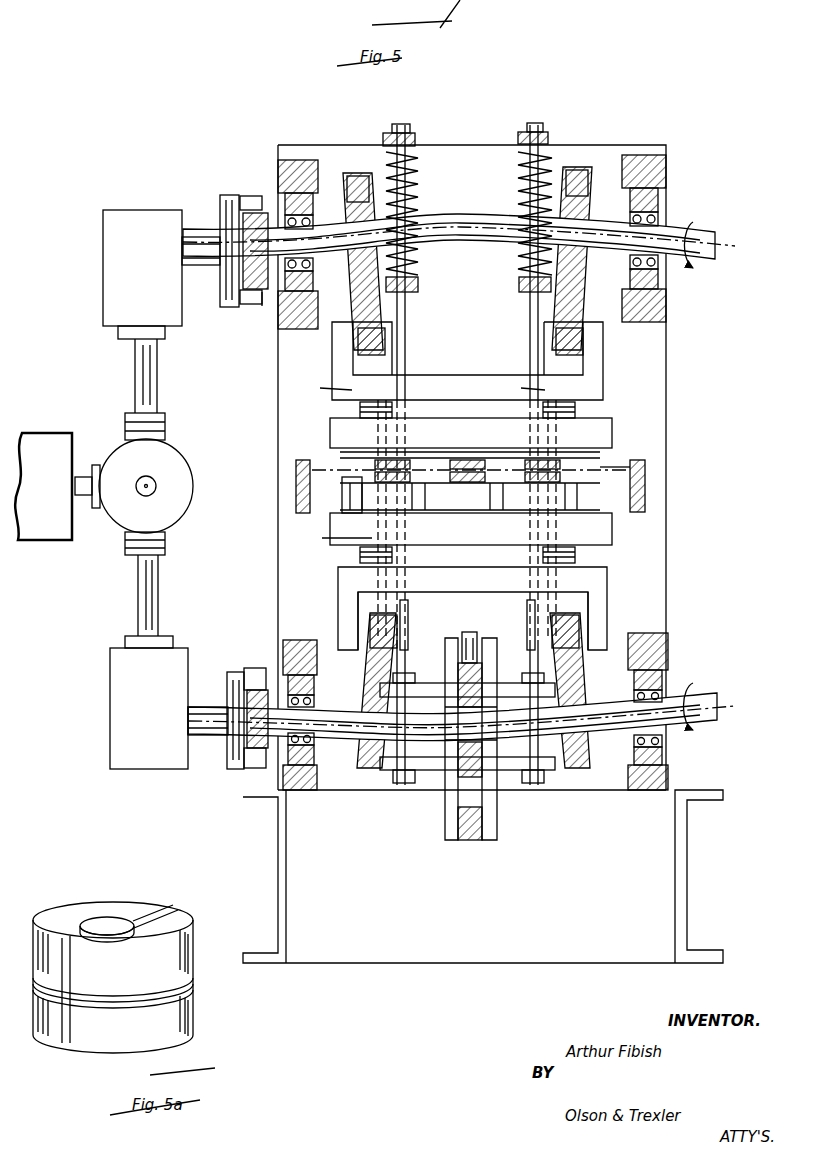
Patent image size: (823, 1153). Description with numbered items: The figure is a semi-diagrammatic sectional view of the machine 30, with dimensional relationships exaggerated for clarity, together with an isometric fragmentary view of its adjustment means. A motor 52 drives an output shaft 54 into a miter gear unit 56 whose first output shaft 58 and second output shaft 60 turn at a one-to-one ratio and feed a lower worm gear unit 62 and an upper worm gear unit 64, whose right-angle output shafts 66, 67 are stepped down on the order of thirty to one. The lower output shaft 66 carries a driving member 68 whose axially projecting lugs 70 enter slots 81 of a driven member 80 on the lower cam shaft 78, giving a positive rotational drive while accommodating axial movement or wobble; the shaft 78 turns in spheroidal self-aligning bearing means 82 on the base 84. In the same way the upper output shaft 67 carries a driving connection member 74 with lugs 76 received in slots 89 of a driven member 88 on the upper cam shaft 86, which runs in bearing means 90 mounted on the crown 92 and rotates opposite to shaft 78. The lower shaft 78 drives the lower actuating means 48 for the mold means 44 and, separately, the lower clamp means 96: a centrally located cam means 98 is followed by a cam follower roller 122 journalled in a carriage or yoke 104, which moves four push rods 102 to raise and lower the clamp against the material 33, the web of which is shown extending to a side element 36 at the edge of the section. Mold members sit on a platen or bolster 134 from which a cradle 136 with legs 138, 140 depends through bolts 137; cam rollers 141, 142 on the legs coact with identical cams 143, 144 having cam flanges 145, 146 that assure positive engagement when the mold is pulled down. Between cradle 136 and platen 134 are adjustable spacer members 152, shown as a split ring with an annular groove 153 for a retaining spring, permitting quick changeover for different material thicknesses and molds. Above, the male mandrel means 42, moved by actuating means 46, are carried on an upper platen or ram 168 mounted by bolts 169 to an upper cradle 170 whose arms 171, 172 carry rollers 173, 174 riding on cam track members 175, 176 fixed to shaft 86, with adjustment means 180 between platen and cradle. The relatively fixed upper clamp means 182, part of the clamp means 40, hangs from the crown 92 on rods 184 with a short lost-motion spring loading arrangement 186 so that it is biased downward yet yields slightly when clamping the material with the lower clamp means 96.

In FIG. 5, the machine 30 is at (498, 452).
In FIG. 5, the material 33 is at (296, 490).
In FIG. 5, the spindle 36 is at (649, 490).
In FIG. 5, the clamp means 40 is at (565, 455).
In FIG. 5, the male mandrel means 42 is at (345, 465).
In FIG. 5, the mold means 44 is at (345, 492).
In FIG. 5, the actuating means 46 is at (604, 160).
In FIG. 5, the lower actuating means 48 is at (620, 792).
In FIG. 5, the motor 52 is at (42, 541).
In FIG. 5, the output shaft 54 is at (82, 472).
In FIG. 5, the miter gear unit 56 is at (172, 503).
In FIG. 5, the first output shaft 58 is at (160, 592).
In FIG. 5, the second output shaft 60 is at (158, 378).
In FIG. 5, the lower worm gear unit 62 is at (118, 737).
In FIG. 5, the upper worm gear unit 64 is at (120, 222).
In FIG. 5, the lower output shaft 66 is at (218, 738).
In FIG. 5, the upper output shaft 67 is at (186, 238).
In FIG. 5, the driving member 68 is at (232, 775).
In FIG. 5, the lugs 70 is at (240, 675).
In FIG. 5, the driving connection member 74 is at (228, 195).
In FIG. 5, the lugs 76 is at (250, 198).
In FIG. 5, the lower cam shaft 78 is at (716, 705).
In FIG. 5, the driven member 80 is at (262, 770).
In FIG. 5, the slots 81 is at (255, 670).
In FIG. 5, the bearing means 82 is at (670, 750).
In FIG. 5, the base 84 is at (450, 950).
In FIG. 5, the upper cam shaft 86 is at (470, 222).
In FIG. 5, the driven member 88 is at (244, 304).
In FIG. 5, the slots 89 is at (262, 315).
In FIG. 5, the bearing means 90 is at (306, 212).
In FIG. 5, the crown 92 is at (300, 162).
In FIG. 5, the lower clamp means 96 is at (470, 490).
In FIG. 5, the cam means 98 is at (465, 776).
In FIG. 5, the push rods 102 is at (407, 605).
In FIG. 5, the carriage or yoke 104 is at (481, 724).
In FIG. 5, the cam follower roller 122 is at (474, 637).
In FIG. 5, the platen or bolster 134 is at (612, 528).
In FIG. 5, the cradle 136 is at (475, 602).
In FIG. 5, the bolts 137 is at (329, 538).
In FIG. 5, the cradle leg 138 is at (606, 601).
In FIG. 5, the cradle leg 140 is at (340, 599).
In FIG. 5, the cam roller 141 is at (580, 634).
In FIG. 5, the cam roller 142 is at (372, 632).
In FIG. 5, the cam 143 is at (582, 676).
In FIG. 5, the cam 144 is at (372, 683).
In FIG. 5, the cam flange 145 is at (550, 638).
In FIG. 5, the cam flange 146 is at (408, 632).
In FIG. 5, the adjustable spacer members 152 is at (360, 558).
In FIG. 5A, the adjustable spacer members 152 is at (131, 957).
In FIG. 5A, the annular groove 153 is at (193, 982).
In FIG. 5, the upper platen or ram 168 is at (465, 430).
In FIG. 5, the bolts 169 is at (414, 386).
In FIG. 5, the upper cradle 170 is at (464, 358).
In FIG. 5, the cradle arm 171 is at (340, 358).
In FIG. 5, the cradle arm 172 is at (603, 357).
In FIG. 5, the roller 173 is at (388, 327).
In FIG. 5, the roller 174 is at (556, 336).
In FIG. 5, the cam track member 175 is at (416, 288).
In FIG. 5, the cam track member 176 is at (540, 290).
In FIG. 5, the adjustment means 180 is at (578, 411).
In FIG. 5, the upper clamp means 182 is at (468, 462).
In FIG. 5, the rods 184 is at (407, 357).
In FIG. 5, the spring loading arrangement 186 is at (408, 178).